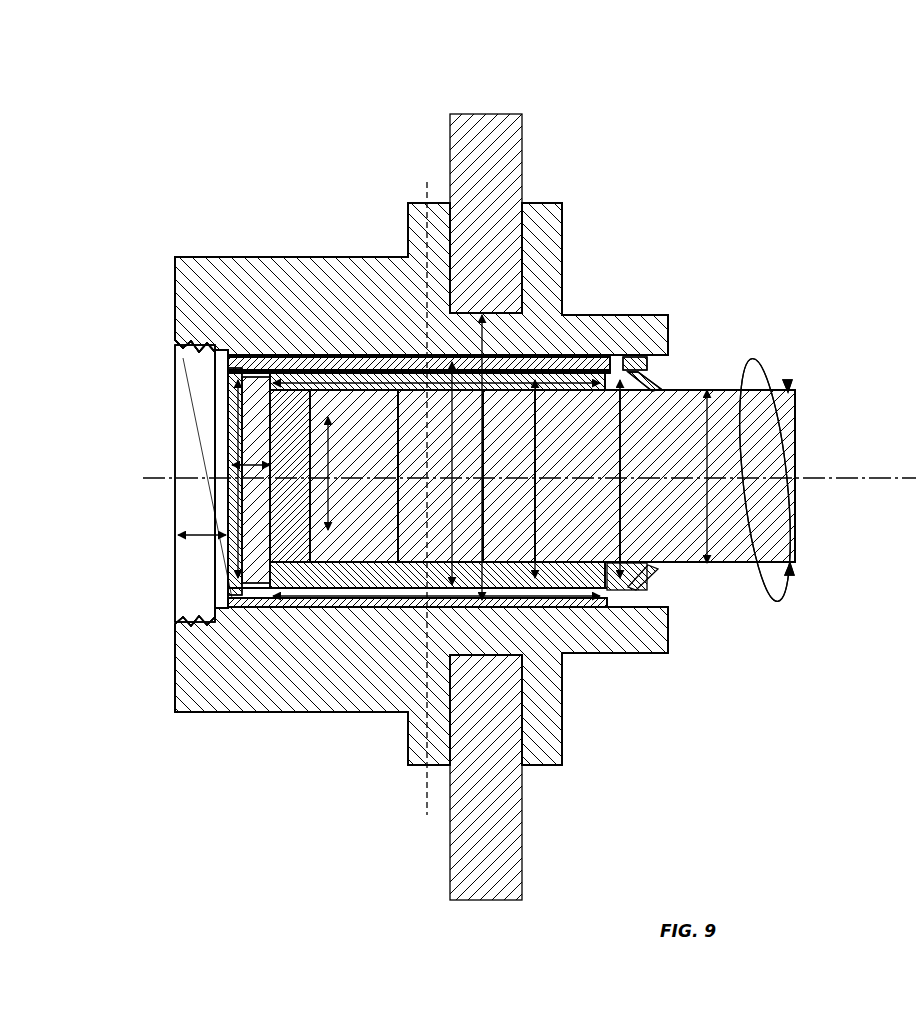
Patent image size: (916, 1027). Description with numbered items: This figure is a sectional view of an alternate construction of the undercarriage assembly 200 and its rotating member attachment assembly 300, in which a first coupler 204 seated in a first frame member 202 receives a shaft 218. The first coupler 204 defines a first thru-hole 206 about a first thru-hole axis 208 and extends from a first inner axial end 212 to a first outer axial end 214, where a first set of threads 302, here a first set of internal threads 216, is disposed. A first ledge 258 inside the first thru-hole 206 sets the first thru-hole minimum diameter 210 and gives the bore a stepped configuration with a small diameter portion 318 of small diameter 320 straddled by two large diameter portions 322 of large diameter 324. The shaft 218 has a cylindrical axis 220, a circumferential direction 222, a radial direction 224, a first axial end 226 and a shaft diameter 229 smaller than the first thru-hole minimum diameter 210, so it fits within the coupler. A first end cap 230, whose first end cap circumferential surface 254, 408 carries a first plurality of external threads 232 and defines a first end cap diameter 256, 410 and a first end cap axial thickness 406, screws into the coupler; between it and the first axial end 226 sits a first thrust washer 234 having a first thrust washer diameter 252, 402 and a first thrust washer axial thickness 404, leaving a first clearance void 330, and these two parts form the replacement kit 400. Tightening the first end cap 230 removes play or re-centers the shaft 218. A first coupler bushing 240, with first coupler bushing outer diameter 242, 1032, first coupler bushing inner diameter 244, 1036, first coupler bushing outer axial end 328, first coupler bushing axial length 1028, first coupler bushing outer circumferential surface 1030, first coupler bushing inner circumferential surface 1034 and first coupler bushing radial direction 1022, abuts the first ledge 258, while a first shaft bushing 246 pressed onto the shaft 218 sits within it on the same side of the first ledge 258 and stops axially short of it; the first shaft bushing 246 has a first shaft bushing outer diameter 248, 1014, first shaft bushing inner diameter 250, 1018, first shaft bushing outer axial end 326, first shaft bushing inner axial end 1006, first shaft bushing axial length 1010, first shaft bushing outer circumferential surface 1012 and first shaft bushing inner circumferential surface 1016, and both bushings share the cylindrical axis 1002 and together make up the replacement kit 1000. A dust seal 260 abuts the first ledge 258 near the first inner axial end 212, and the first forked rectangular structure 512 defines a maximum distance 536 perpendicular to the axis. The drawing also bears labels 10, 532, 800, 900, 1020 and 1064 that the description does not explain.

The section line 10 is at (427, 182).
The undercarriage assembly 200 is at (502, 80).
The first frame member 202 is at (512, 848).
The first coupler 204 is at (193, 703).
The first thru-hole 206 is at (585, 367).
The first thru-hole axis 208 is at (177, 480).
The first thru-hole minimum diameter 210 is at (627, 437).
The first inner axial end 212 is at (668, 345).
The first outer axial end 214 is at (177, 292).
The first set of internal threads 216 is at (222, 350).
The shaft 218 is at (516, 540).
The cylindrical axis 220 is at (727, 465).
The circumferential direction 222 is at (789, 388).
The radial direction 224 is at (336, 437).
The first axial end 226 is at (272, 542).
The shaft diameter 229 is at (762, 585).
The first end cap 230 is at (194, 442).
The first plurality of external threads 232 is at (215, 357).
The first thrust washer 234 is at (243, 605).
The first coupler bushing 240 is at (322, 360).
The first coupler bushing outer diameter 242 is at (455, 448).
The first coupler bushing inner diameter 244 is at (538, 436).
The first shaft bushing 246 is at (300, 592).
The first shaft bushing outer diameter 248 is at (396, 406).
The first shaft bushing inner diameter 250 is at (498, 378).
The first thrust washer diameter 252 is at (248, 372).
The first end cap circumferential surface 254 is at (237, 372).
The first end cap diameter 256 is at (236, 383).
The first ledge 258 is at (645, 335).
The dust seal 260 is at (650, 368).
The rotating member attachment assembly 300 is at (600, 94).
The first set of threads 302 is at (190, 345).
The small diameter portion 318 is at (650, 570).
The small diameter 320 is at (625, 534).
The large diameter portion 322 is at (340, 608).
The large diameter 324 is at (318, 411).
The first shaft bushing outer axial end 326 is at (262, 590).
The first coupler bushing outer axial end 328 is at (284, 608).
The first clearance void 330 is at (195, 625).
The replacement kit 400 is at (168, 605).
The first thrust washer diameter 402 is at (246, 530).
The first thrust washer axial thickness 404 is at (270, 460).
The first end cap axial thickness 406 is at (177, 540).
The first end cap circumferential surface 408 is at (237, 372).
The first end cap diameter 410 is at (212, 418).
The first forked rectangular structure 512 is at (546, 198).
The lower boss 532 is at (373, 714).
The maximum distance 536 is at (482, 312).
The upper shaft 800 is at (463, 105).
The assembly 900 is at (418, 118).
The replacement kit 1000 is at (560, 365).
The first shaft bushing cylindrical axis 1002 is at (563, 480).
The first shaft bushing inner axial end 1006 is at (612, 388).
The first shaft bushing axial length 1010 is at (352, 368).
The first shaft bushing outer circumferential surface 1012 is at (372, 606).
The first shaft bushing outer diameter 1014 is at (338, 530).
The first shaft bushing inner circumferential surface 1016 is at (496, 383).
The first shaft bushing inner diameter 1018 is at (498, 378).
The shaft segment 1020 is at (645, 482).
The first coupler bushing radial direction 1022 is at (338, 504).
The first coupler bushing axial length 1028 is at (545, 650).
The first coupler bushing outer circumferential surface 1030 is at (385, 352).
The first coupler bushing outer diameter 1032 is at (455, 492).
The first coupler bushing inner circumferential surface 1034 is at (642, 357).
The first coupler bushing inner diameter 1036 is at (543, 476).
The rotor segment 1064 is at (335, 473).